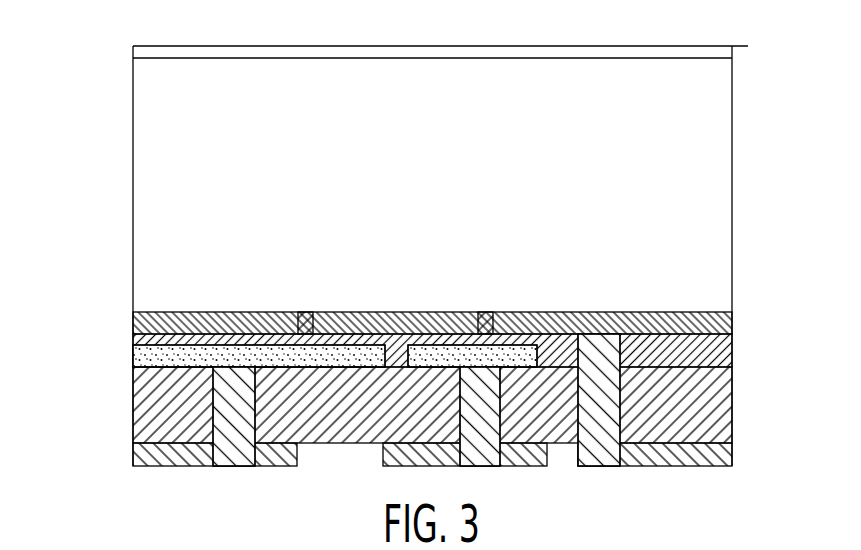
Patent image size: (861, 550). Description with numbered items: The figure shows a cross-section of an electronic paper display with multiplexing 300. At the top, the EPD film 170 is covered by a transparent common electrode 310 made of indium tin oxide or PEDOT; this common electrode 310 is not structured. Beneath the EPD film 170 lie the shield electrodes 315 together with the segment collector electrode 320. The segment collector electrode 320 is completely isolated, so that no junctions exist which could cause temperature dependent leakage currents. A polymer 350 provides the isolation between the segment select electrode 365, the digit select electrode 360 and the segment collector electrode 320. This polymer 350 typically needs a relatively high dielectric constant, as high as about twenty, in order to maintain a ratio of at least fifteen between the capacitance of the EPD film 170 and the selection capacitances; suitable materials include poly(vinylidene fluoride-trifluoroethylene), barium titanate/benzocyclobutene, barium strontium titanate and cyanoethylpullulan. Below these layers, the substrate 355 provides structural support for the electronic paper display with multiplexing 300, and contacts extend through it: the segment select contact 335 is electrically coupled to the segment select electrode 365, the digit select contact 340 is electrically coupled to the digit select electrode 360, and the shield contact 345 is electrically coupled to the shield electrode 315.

The electronic paper display with multiplexing 300 is at (795, 91).
The common electrode 310 is at (142, 52).
The EPD film 170 is at (152, 152).
The shield electrodes 315 is at (233, 312).
The segment collector electrode 320 is at (400, 312).
The digit select electrode 360 is at (525, 333).
The polymer 350 is at (720, 350).
The segment select electrode 365 is at (133, 353).
The substrate 355 is at (732, 424).
The segment select contact 335 is at (212, 466).
The digit select contact 340 is at (487, 466).
The shield contact 345 is at (700, 466).